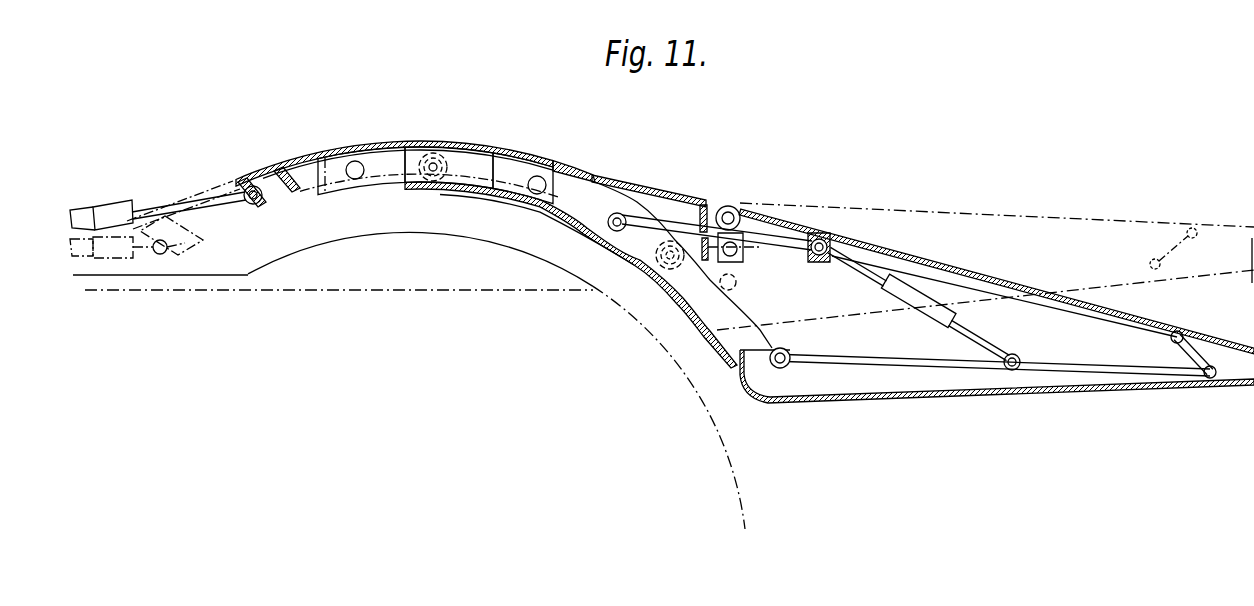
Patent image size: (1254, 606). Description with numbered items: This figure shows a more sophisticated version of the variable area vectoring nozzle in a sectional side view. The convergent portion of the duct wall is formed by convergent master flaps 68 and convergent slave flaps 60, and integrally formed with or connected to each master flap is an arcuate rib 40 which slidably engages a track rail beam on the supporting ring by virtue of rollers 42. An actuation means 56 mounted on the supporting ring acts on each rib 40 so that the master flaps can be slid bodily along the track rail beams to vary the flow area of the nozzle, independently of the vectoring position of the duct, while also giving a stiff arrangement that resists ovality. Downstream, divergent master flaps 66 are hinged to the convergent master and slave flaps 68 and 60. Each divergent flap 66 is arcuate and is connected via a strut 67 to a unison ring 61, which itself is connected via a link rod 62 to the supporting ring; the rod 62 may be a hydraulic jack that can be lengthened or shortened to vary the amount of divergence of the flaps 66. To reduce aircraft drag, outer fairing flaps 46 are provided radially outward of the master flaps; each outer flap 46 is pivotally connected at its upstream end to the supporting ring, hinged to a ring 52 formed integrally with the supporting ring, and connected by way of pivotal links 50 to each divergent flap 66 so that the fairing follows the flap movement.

The arcuate rib 40 is at (502, 170).
The rollers 42 is at (435, 160).
The outer flaps 46 is at (995, 283).
The pivotal links 50 is at (1186, 337).
The ring 52 is at (632, 177).
The actuation means 56 is at (107, 210).
The convergent slave flaps 60 is at (710, 333).
The unison ring 61 is at (822, 240).
The link rod 62 is at (674, 227).
The divergent master flaps 66 is at (962, 374).
The strut 67 is at (967, 334).
The convergent master flaps 68 is at (690, 307).